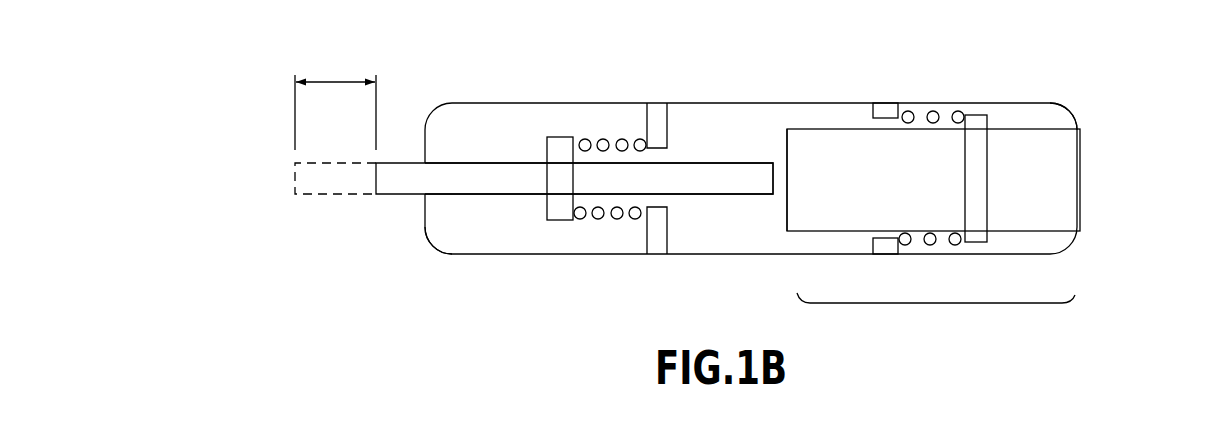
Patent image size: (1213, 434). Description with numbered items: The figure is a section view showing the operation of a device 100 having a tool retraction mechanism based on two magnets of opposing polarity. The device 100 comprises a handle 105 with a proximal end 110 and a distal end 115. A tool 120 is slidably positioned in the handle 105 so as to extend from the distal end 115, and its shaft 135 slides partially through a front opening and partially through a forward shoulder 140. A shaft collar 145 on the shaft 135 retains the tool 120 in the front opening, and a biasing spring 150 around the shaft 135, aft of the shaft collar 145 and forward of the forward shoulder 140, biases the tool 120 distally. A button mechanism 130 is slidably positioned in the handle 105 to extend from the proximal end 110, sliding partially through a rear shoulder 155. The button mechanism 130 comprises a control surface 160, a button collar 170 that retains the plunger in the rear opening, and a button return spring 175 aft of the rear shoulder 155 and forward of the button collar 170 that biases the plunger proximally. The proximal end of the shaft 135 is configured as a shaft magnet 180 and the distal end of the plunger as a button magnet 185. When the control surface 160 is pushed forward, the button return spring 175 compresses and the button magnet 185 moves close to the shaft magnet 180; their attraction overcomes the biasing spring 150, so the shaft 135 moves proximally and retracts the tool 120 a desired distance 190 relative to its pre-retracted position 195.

The device 100 is at (917, 38).
The handle 105 is at (702, 102).
The proximal end 110 is at (1078, 107).
The distal end 115 is at (430, 247).
The tool 120 is at (397, 193).
The button mechanism 130 is at (936, 320).
The shaft 135 is at (520, 163).
The forward shoulder 140 is at (655, 250).
The shaft collar 145 is at (563, 137).
The biasing spring 150 is at (600, 222).
The rear shoulder 155 is at (883, 248).
The control surface 160 is at (1080, 173).
The button collar 170 is at (975, 115).
The button return spring 175 is at (960, 247).
The shaft magnet 180 is at (774, 182).
The button magnet 185 is at (787, 147).
The desired distance 190 is at (338, 77).
The pre-retracted position 195 is at (310, 193).